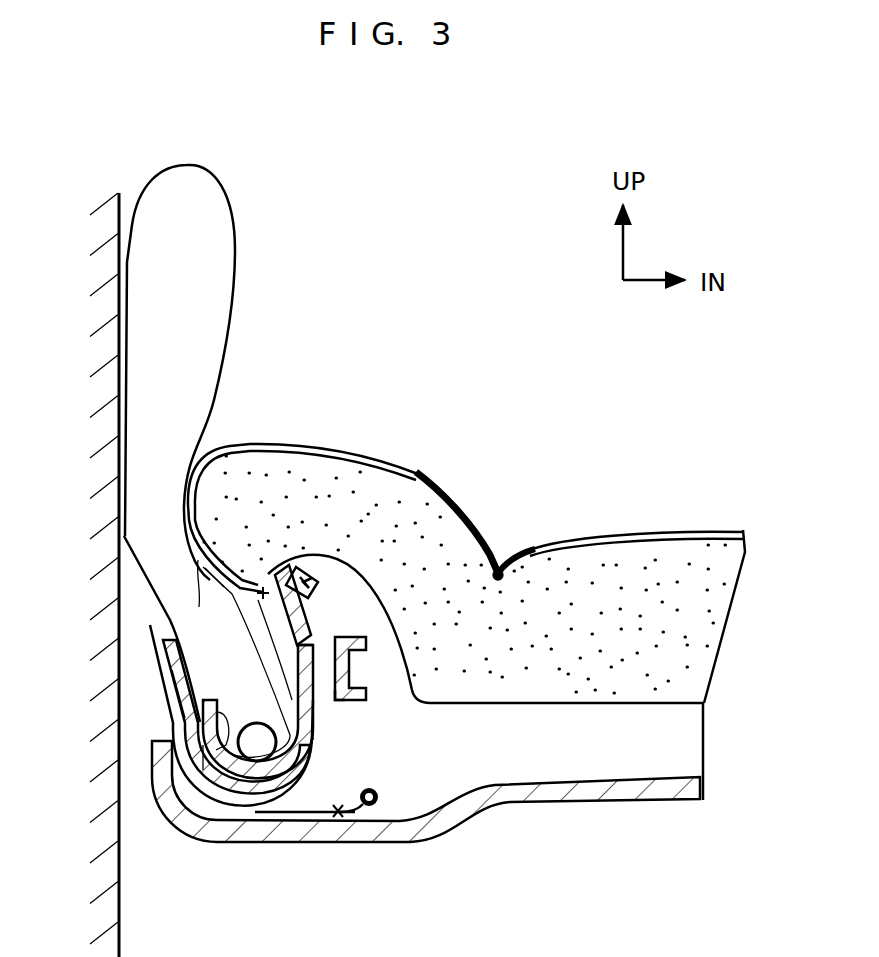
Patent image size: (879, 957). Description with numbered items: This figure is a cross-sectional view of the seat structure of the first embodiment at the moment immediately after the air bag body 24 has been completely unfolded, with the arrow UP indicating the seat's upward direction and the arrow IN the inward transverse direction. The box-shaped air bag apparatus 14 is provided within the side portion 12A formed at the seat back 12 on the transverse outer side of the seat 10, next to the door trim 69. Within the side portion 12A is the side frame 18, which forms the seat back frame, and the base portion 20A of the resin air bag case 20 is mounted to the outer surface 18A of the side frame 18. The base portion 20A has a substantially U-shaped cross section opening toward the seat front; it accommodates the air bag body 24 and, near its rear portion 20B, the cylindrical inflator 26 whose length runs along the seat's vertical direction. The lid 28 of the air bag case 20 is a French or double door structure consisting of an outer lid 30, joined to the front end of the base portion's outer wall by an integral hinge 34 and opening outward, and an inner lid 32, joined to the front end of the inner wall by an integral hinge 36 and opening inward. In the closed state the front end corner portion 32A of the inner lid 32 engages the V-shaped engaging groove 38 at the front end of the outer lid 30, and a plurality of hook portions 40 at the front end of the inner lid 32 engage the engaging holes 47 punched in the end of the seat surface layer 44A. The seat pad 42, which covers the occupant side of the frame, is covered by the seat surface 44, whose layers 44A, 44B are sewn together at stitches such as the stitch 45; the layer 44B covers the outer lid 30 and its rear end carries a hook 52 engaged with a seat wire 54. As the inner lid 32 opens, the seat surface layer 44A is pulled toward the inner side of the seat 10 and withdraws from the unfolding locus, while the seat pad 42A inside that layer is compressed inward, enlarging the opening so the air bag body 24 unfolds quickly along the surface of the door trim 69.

The seat 10 is at (629, 458).
The seat back 12 is at (544, 466).
The side portion 12A is at (422, 466).
The air bag apparatus 14 is at (178, 770).
The side frame 18 is at (364, 667).
The outer surface 18A is at (338, 702).
The air bag case 20 is at (259, 808).
The base portion 20A is at (316, 750).
The rear portion 20B is at (292, 805).
The air bag body 24 is at (232, 330).
The inflator 26 is at (248, 760).
The lid 28 is at (165, 688).
The outer lid 30 is at (165, 672).
The inner lid 32 is at (316, 592).
The front end corner portion 32A is at (269, 572).
The integral hinge 34 is at (192, 780).
The integral hinge 36 is at (314, 642).
The engaging groove 38 is at (147, 630).
The hook portions 40 is at (297, 566).
The seat pad 42 is at (528, 556).
The seat pad 42A is at (213, 587).
The seat surface 44 is at (595, 530).
The seat surface layer 44A is at (244, 605).
The seat surface layer 44B is at (178, 712).
The stitch 45 is at (505, 594).
The engaging holes 47 is at (273, 650).
The hook 52 is at (378, 801).
The seat wire 54 is at (363, 796).
The door trim 69 is at (128, 461).